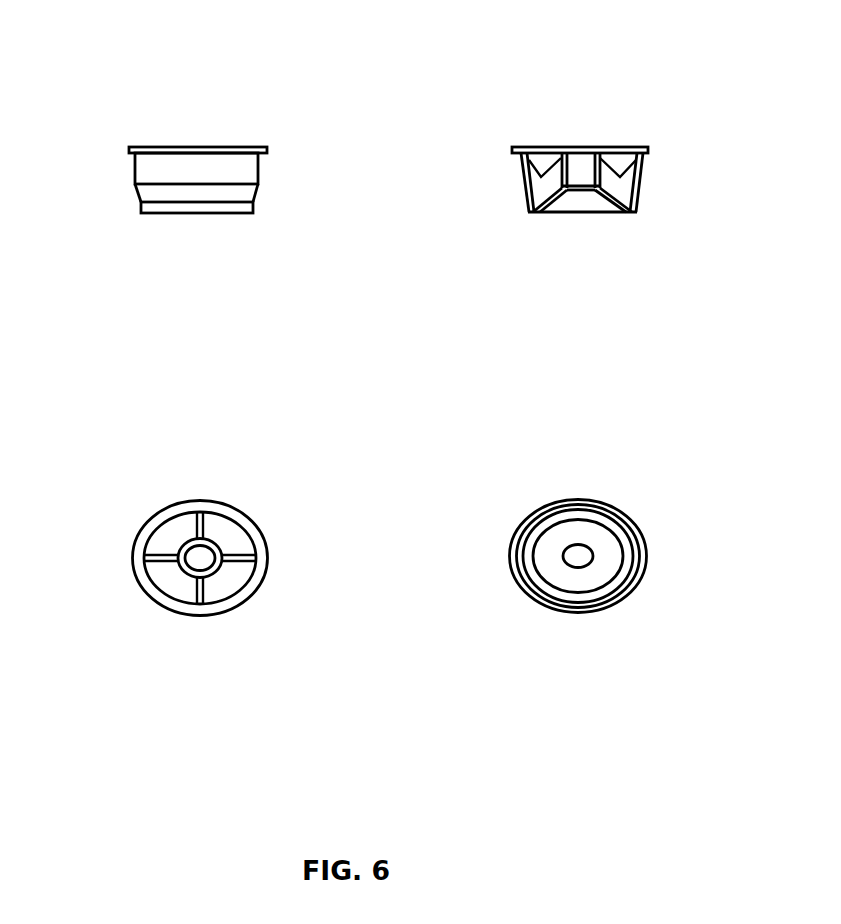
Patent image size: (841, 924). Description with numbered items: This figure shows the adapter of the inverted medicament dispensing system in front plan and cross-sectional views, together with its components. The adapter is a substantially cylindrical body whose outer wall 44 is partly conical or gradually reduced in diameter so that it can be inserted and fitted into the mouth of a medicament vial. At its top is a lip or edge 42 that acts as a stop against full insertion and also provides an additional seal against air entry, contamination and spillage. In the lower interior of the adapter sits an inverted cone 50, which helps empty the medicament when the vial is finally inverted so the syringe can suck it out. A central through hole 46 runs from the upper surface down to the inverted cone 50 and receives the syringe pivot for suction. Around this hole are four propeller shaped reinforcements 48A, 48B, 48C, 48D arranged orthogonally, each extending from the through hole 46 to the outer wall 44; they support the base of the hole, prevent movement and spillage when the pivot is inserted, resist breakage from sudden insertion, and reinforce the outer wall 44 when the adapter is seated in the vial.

The lip or edge 42 is at (127, 149).
The outer wall 44 is at (133, 186).
The through hole 46 is at (578, 150).
The propeller shaped reinforcement 48A is at (540, 176).
The propeller shaped reinforcement 48B is at (622, 177).
The propeller shaped reinforcement 48C is at (205, 597).
The propeller shaped reinforcement 48D is at (157, 560).
The inverted cone 50 is at (587, 204).